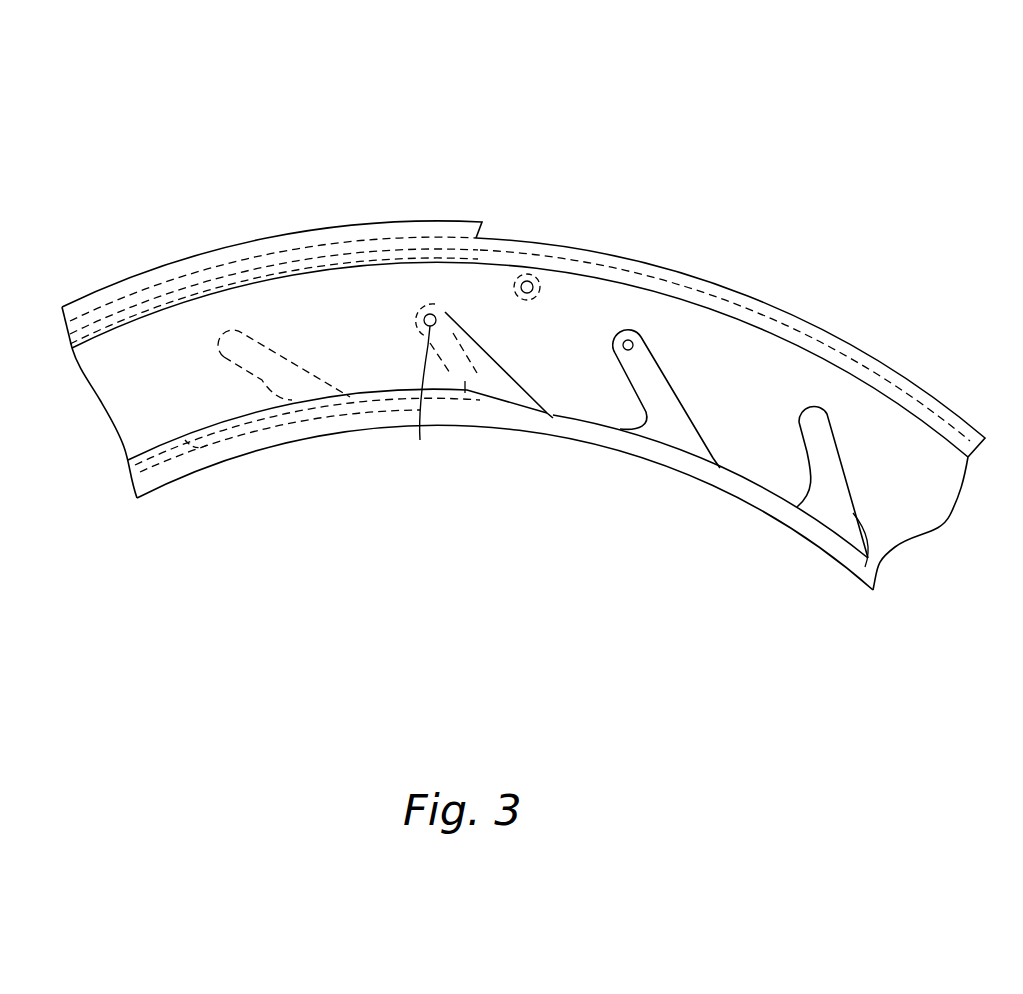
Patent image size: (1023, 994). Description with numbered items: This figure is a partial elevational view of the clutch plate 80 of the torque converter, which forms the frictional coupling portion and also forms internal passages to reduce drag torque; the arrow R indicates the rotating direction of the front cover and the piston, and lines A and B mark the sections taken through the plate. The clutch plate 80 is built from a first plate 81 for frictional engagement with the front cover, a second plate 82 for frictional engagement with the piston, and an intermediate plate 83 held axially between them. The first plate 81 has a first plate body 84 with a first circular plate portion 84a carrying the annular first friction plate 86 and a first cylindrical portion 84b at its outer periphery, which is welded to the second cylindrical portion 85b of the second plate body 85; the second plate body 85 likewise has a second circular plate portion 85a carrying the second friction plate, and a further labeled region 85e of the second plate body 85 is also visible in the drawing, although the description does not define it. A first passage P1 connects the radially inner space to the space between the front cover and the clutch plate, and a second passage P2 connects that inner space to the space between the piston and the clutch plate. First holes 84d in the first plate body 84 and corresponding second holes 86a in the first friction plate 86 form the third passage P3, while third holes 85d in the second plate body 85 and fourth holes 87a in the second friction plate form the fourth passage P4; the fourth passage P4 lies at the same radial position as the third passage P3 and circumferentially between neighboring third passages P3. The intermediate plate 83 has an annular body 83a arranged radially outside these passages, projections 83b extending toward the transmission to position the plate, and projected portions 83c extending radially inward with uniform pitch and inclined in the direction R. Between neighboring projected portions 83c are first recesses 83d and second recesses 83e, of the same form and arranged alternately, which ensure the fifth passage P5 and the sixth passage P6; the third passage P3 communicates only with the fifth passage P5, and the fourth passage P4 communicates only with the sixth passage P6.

The clutch plate 80 is at (846, 168).
The first plate 81 is at (352, 225).
The second plate 82 is at (577, 247).
The intermediate plate 83 is at (694, 303).
The annular body 83a is at (767, 355).
The projections 83b is at (520, 262).
The projected portions 83c is at (588, 408).
The first recesses 83d is at (517, 390).
The second recesses 83e is at (258, 455).
The first plate body 84 is at (282, 235).
The first circular plate portion 84a is at (377, 262).
The first cylindrical portion 84b is at (308, 243).
The first holes 84d is at (420, 440).
The second plate body 85 is at (920, 367).
The second circular plate portion 85a is at (933, 393).
The second cylindrical portion 85b is at (838, 337).
The third holes 85d is at (646, 262).
The band hook 85e is at (700, 470).
The first friction plate 86 is at (163, 334).
The second holes 86a is at (427, 491).
The fourth holes 87a is at (657, 121).
The first passage P1 is at (482, 330).
The second passage P2 is at (208, 328).
The third passage P3 is at (437, 305).
The fourth passage P4 is at (240, 335).
The fifth passage P5 is at (457, 202).
The sixth passage P6 is at (303, 413).
The line A- A is at (430, 314).
The line B- B is at (231, 335).
The rotating direction R is at (655, 714).